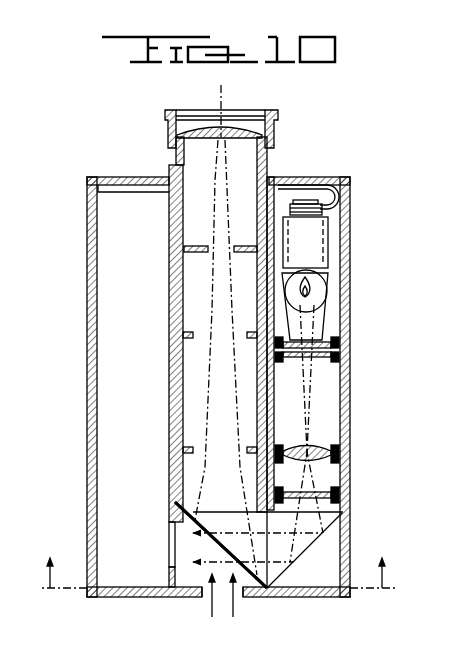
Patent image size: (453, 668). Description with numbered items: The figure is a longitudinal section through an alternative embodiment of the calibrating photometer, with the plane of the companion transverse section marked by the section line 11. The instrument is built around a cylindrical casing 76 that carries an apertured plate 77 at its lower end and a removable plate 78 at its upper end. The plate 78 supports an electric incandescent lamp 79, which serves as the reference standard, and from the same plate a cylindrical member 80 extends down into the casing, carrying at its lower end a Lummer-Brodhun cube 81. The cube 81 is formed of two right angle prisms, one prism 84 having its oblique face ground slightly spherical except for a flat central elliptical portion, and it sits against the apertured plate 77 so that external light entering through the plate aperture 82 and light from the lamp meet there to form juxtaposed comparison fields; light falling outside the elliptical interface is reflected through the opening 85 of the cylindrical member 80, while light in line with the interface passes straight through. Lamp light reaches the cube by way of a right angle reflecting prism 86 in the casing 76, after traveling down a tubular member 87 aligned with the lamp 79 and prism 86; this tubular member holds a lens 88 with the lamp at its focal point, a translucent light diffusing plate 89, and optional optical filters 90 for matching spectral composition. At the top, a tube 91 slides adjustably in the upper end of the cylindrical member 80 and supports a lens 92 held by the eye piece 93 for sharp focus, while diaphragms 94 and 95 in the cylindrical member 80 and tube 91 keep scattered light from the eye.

The section line 11 is at (222, 578).
The cylindrical casing 76 is at (352, 252).
The apertured plate 77 is at (322, 597).
The plate 78 is at (315, 178).
The electric incandescent lamp 79 is at (305, 307).
The cylindrical member 80 is at (169, 379).
The Lummer-Brodhun cube 81 is at (188, 500).
The plate aperture 82 is at (223, 595).
The right angle prism 84 is at (192, 577).
The opening 85 is at (170, 528).
The right angle reflecting prism 86 is at (325, 575).
The tubular member 87 is at (352, 202).
The lens 88 is at (288, 450).
The translucent light diffusing plate 89 is at (332, 483).
The optical filters 90 is at (308, 357).
The tube 91 is at (266, 155).
The lens 92 is at (234, 130).
The eye piece 93 is at (272, 127).
The diaphragm 94 is at (192, 338).
The diaphragm 95 is at (197, 245).